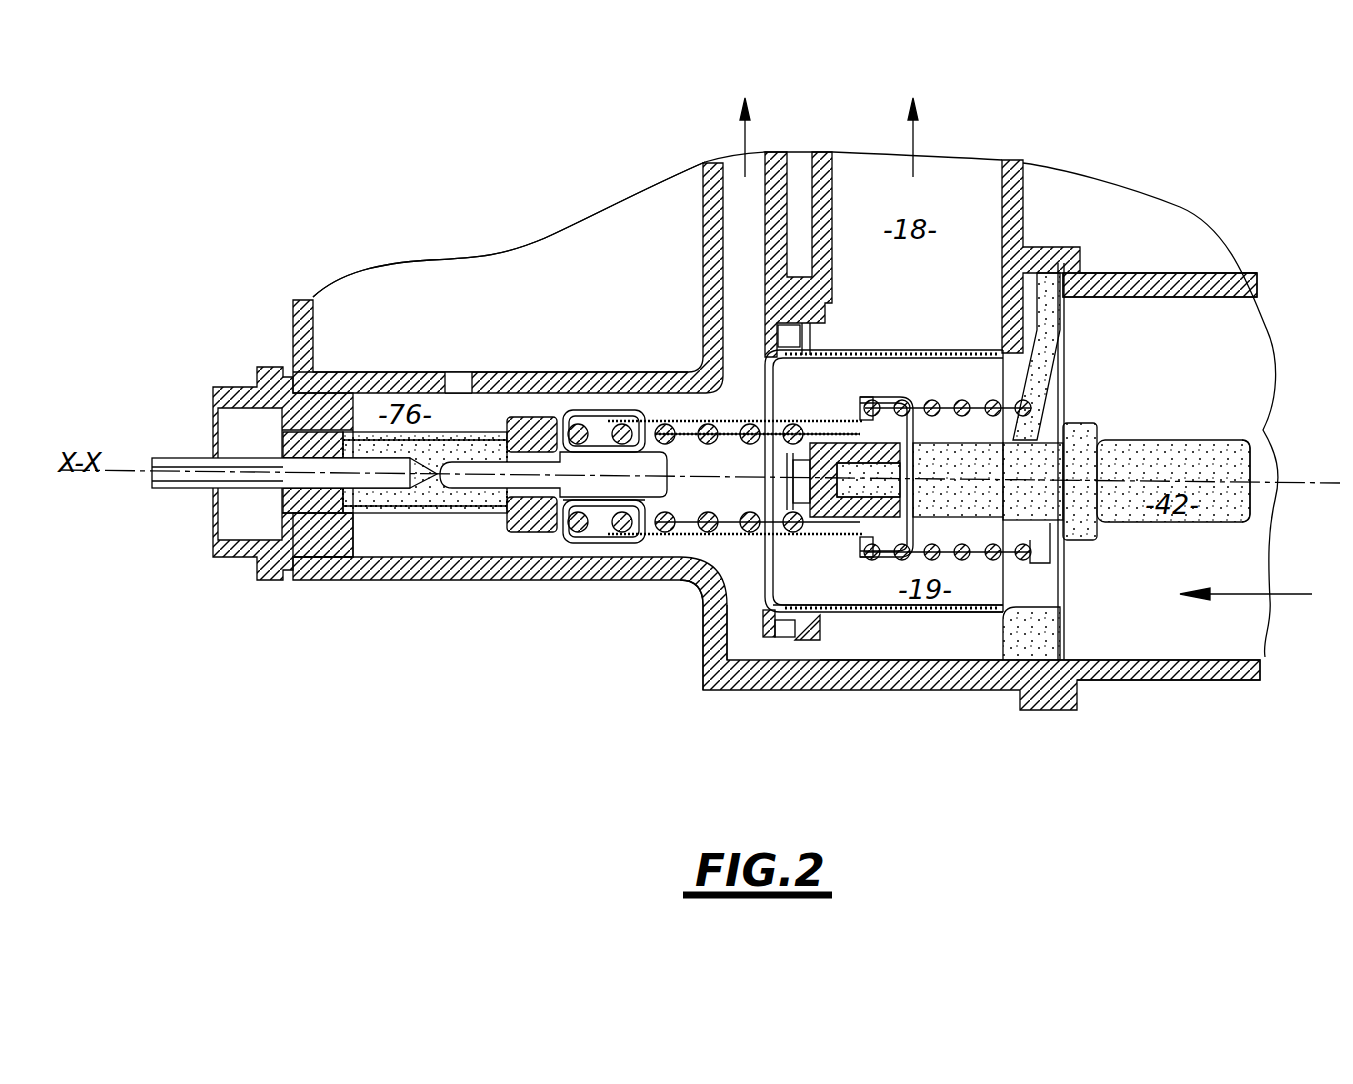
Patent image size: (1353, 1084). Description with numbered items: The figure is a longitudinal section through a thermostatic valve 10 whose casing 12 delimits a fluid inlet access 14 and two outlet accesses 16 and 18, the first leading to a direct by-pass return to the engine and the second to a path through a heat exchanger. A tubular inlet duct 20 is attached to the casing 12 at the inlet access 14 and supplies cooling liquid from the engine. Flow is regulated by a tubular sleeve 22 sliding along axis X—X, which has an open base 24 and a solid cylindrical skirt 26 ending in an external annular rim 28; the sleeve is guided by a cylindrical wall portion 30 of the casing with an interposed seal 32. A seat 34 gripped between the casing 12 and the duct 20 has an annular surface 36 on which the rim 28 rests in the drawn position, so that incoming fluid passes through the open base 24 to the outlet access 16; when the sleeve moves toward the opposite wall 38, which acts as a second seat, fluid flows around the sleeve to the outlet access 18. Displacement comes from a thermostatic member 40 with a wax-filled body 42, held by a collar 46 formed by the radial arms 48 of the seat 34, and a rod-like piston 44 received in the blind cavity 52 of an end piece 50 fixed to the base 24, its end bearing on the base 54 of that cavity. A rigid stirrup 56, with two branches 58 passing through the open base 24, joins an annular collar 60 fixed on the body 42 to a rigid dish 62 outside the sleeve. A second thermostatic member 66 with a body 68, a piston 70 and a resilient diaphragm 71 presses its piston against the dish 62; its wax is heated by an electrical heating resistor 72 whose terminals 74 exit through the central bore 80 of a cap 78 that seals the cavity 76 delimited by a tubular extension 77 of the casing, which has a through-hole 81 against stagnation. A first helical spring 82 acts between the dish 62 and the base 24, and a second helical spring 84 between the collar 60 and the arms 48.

The valve 10 is at (574, 678).
The casing 12 is at (1030, 190).
The inlet access 14 is at (1127, 662).
The outlet access 16 is at (743, 208).
The outlet access 18 is at (841, 227).
The tubular inlet duct 20 is at (1207, 273).
The tubular sleeve 22 is at (950, 630).
The open base 24 is at (703, 688).
The solid cylindrical skirt 26 is at (897, 615).
The external annular rim 28 is at (983, 633).
The cylindrical wall portion 30 is at (787, 655).
The seal 32 is at (827, 625).
The seat 34 is at (1133, 277).
The annular surface 36 is at (1000, 337).
The wall 38 is at (713, 340).
The thermostatic member 40 is at (1265, 427).
The body 42 is at (1126, 481).
The piston 44 is at (850, 443).
The collar 46 is at (1063, 407).
The radial arms 48 is at (1007, 380).
The end piece 50 is at (827, 522).
The blind cavity 52 is at (888, 460).
The base 54 is at (917, 488).
The stirrup 56 is at (668, 560).
The branches 58 is at (740, 420).
The annular collar 60 is at (913, 530).
The rigid dish 62 is at (667, 468).
The thermostatic member 66 is at (431, 545).
The body 68 is at (493, 533).
The piston 70 is at (593, 482).
The resilient diaphragm 71 is at (543, 412).
The electrical heating resistor 72 is at (370, 522).
The terminals 74 is at (160, 490).
The cavity 76 is at (526, 475).
The tubular extension 77 is at (523, 377).
The cap 78 is at (267, 362).
The central bore 80 is at (367, 435).
The through-hole 81 is at (455, 372).
The first helical spring 82 is at (697, 592).
The second helical spring 84 is at (1013, 577).